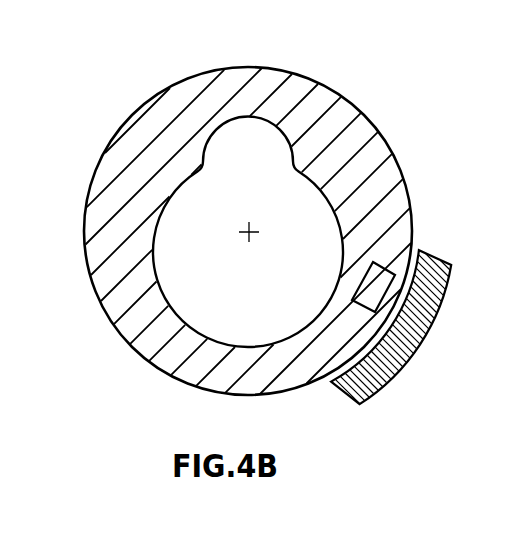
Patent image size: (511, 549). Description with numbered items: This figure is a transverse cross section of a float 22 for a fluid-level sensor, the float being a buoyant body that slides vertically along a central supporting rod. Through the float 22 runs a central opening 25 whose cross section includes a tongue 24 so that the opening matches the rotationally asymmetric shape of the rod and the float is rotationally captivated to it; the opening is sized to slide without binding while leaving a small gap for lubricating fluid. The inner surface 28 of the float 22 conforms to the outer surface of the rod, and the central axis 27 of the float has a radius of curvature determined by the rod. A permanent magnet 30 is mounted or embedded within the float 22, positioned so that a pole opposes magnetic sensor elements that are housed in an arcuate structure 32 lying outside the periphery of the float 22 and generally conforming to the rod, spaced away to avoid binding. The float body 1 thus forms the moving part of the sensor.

The housing body 1 is at (158, 112).
The float 22 is at (74, 253).
The tongue 24 is at (267, 137).
The central opening 25 is at (231, 282).
The central axis 27 is at (249, 226).
The inner surface 28 is at (158, 283).
The permanent magnet 30 is at (380, 283).
The arcuate structure 32 is at (423, 262).